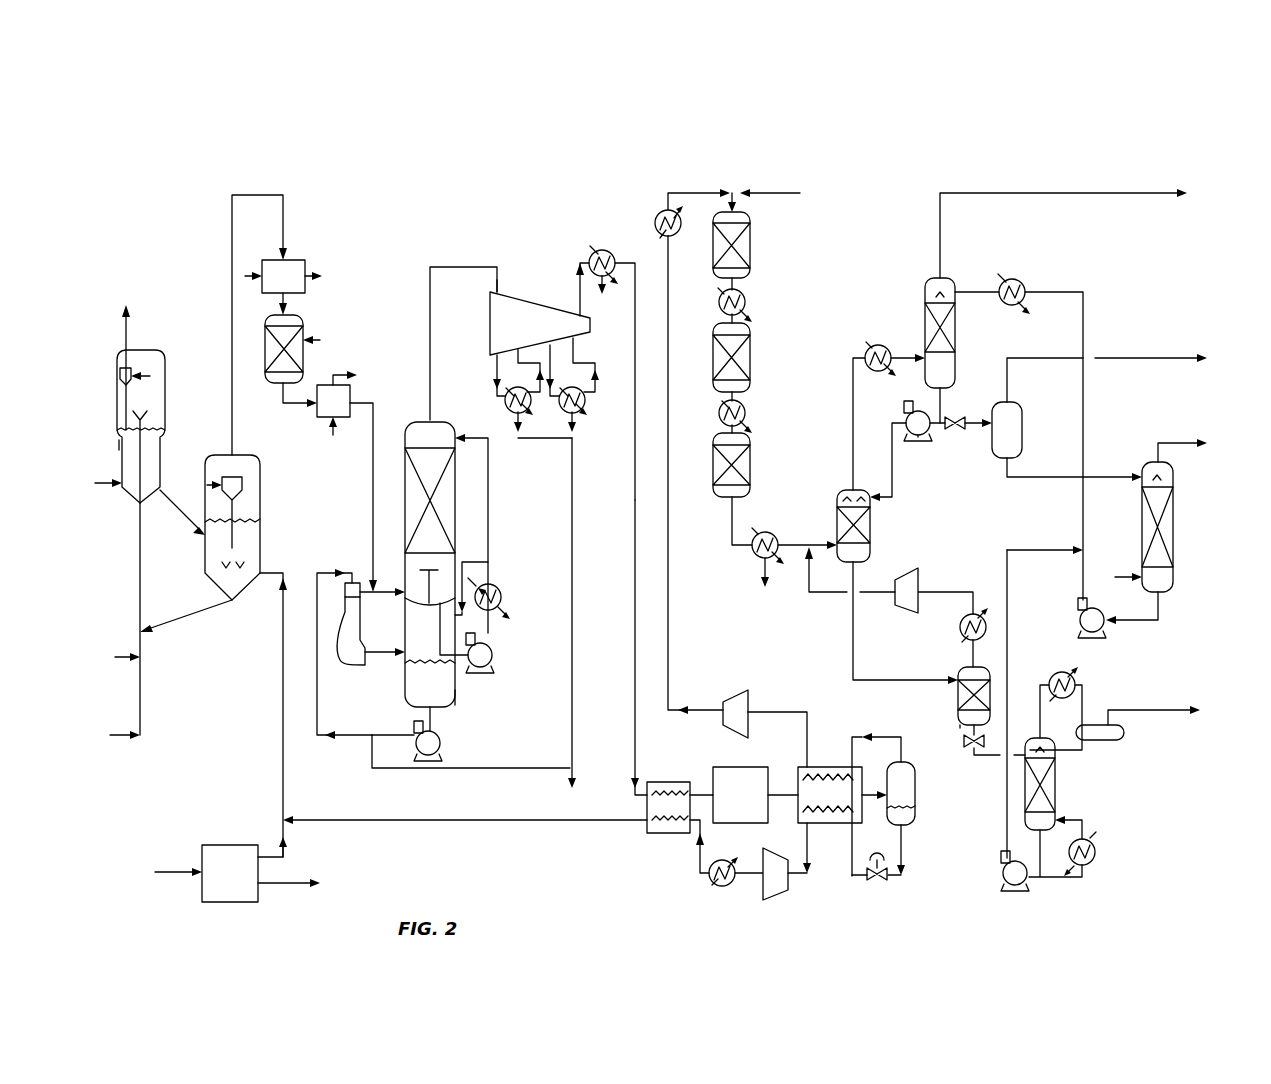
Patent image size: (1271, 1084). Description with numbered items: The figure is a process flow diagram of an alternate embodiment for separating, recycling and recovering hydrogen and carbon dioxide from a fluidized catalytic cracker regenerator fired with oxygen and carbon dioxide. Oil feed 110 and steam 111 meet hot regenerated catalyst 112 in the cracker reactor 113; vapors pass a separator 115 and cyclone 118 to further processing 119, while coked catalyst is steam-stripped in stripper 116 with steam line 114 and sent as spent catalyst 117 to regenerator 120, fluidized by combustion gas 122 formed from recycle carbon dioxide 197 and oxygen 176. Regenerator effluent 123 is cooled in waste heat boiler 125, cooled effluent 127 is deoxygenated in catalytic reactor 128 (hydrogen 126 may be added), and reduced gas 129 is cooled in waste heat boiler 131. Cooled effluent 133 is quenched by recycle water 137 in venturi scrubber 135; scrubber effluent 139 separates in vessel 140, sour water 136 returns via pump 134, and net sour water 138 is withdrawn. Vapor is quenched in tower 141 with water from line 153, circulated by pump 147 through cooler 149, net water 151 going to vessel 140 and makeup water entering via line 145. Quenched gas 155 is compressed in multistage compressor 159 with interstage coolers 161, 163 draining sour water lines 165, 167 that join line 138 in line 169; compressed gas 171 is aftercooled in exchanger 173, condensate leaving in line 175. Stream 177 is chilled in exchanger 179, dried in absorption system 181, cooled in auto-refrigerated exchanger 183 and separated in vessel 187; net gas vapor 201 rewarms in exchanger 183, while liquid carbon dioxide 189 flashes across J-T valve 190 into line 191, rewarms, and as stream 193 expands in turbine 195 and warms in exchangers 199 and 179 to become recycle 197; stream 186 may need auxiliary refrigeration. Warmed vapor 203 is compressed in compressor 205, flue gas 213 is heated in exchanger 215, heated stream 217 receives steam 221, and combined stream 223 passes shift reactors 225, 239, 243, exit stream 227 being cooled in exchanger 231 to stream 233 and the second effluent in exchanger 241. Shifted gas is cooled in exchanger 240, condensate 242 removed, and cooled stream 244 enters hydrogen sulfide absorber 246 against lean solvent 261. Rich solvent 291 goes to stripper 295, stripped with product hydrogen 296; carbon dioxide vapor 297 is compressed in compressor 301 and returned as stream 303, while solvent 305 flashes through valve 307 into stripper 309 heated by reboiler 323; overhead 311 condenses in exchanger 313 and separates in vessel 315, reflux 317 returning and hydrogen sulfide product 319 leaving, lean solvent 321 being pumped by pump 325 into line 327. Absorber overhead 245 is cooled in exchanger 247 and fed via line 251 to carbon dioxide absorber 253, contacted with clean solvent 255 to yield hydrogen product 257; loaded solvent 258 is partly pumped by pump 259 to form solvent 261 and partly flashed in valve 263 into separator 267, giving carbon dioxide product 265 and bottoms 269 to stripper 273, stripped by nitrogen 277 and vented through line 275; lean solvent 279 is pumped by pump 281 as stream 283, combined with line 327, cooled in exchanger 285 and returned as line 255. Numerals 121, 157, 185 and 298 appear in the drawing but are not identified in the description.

The oil feed 110 is at (110, 652).
The steam 111 is at (130, 735).
The regenerated catalyst line 112 is at (192, 612).
The fluidized catalytic cracker reactor 113 is at (138, 577).
The steam line 114 is at (98, 486).
The separator 115 is at (168, 400).
The reactor stripper 116 is at (117, 455).
The spent catalyst 117 is at (165, 510).
The cyclone 118 is at (132, 370).
The further processing 119 is at (136, 328).
The regenerator 120 is at (270, 522).
The inlet distributor 121 is at (244, 487).
The combustion gas 122 is at (275, 573).
The effluent stream line 123 is at (283, 220).
The waste heat boiler 125 is at (310, 276).
The hydrogen 126 is at (312, 340).
The cooled effluent 127 is at (280, 310).
The catalytic reactor 128 is at (268, 385).
The deoxygenated and reduced effluent gas 129 is at (284, 405).
The waste heat boiler 131 is at (364, 401).
The cooled effluent 133 is at (372, 452).
The pump 134 is at (442, 752).
The venturi scrubber 135 is at (352, 668).
The sour water 136 is at (432, 722).
The recycle water stream 137 is at (342, 728).
The net sour process water stream 138 is at (455, 770).
The venturi scrubber effluent 139 is at (380, 652).
The separator vessel 140 is at (448, 700).
The quench tower 141 is at (455, 503).
The makeup water line 145 is at (390, 600).
The pump 147 is at (494, 662).
The cooler 149 is at (500, 582).
The net process water line 151 is at (470, 558).
The quench water line 153 is at (492, 514).
The quenched effluent gas 155 is at (452, 267).
The expander inlet line 157 is at (497, 284).
The multistage compressor 159 is at (540, 323).
The interstage cooling exchanger 161 is at (504, 406).
The interstage cooling exchanger 163 is at (586, 408).
The sour water line 165 is at (530, 440).
The sour water line 167 is at (578, 480).
The combined sour water line 169 is at (612, 545).
The compressed gas 171 is at (578, 258).
The aftercooling heat exchanger 173 is at (614, 250).
The sour water knockout line 175 is at (603, 296).
The compressed effluent stream 177 is at (635, 268).
The oxygen stream 176 is at (286, 845).
The heat exchanger 179 is at (662, 784).
The absorption system 181 is at (740, 795).
The auto-refrigerated heat exchanger 183 is at (836, 824).
The gas line 185 is at (782, 790).
The stream 186 is at (874, 792).
The separator vessel 187 is at (915, 788).
The liquid recycle carbon dioxide 189 is at (903, 834).
The J-T valve 190 is at (882, 884).
The cold recycle carbon dioxide line 191 is at (860, 880).
The rewarmed recycle carbon dioxide 193 is at (806, 876).
The turbine 195 is at (760, 888).
The recycle carbon dioxide 197 is at (446, 818).
The exchanger 199 is at (710, 880).
The net combustion gas vapor 201 is at (890, 736).
The warmed vapor stream 203 is at (770, 712).
The compressor 205 is at (736, 692).
The net effluent flue gas stream 213 is at (668, 388).
The heat exchanger 215 is at (656, 226).
The heated stream 217 is at (706, 196).
The steam line 221 is at (794, 205).
The combined stream line 223 is at (738, 204).
The first shift reactor 225 is at (750, 255).
The exit stream 227 is at (744, 294).
The heat exchanger 231 is at (716, 288).
The cooled stream line 233 is at (720, 322).
The second shift reactor 239 is at (750, 362).
The heat exchanger 240 is at (760, 536).
The heat exchanger 241 is at (742, 410).
The condensate line 242 is at (762, 578).
The third shift reactor 243 is at (750, 470).
The cooled stream 244 is at (808, 545).
The overhead gas 245 is at (870, 404).
The hydrogen sulfide absorber tower 246 is at (870, 520).
The exchanger 247 is at (872, 346).
The line 251 is at (904, 358).
The carbon dioxide absorber 253 is at (955, 332).
The clean physical solvent line 255 is at (972, 294).
The hydrogen product line 257 is at (1090, 195).
The bottom stream 258 is at (920, 410).
The pump 259 is at (918, 440).
The hydrogen sulfide lean solvent 261 is at (892, 470).
The valve 263 is at (955, 416).
The carbon dioxide overhead line 265 is at (1112, 358).
The separator 267 is at (1024, 446).
The bottom stream 269 is at (1028, 477).
The carbon dioxide stripper column 273 is at (1176, 520).
The vent line 275 is at (1140, 446).
The nitrogen line 277 is at (1120, 574).
The lean solvent line 279 is at (1162, 608).
The pump 281 is at (1100, 636).
The lean solvent 283 is at (1075, 576).
The heat exchanger 285 is at (1014, 278).
The hydrogen sulfide rich solvent 291 is at (853, 570).
The carbon dioxide stripper 295 is at (958, 700).
The product hydrogen 296 is at (958, 721).
The carbon dioxide vapor 297 is at (968, 656).
The heater 298 is at (958, 630).
The compressor 301 is at (914, 580).
The high pressure carbon dioxide stream 303 is at (822, 592).
The hydrogen sulfide rich solvent 305 is at (960, 742).
The valve 307 is at (966, 748).
The hydrogen sulfide stripper 309 is at (1055, 792).
The stripper overhead 311 is at (1038, 696).
The exchanger 313 is at (1062, 672).
The separator vessel 315 is at (1104, 742).
The reflux liquid 317 is at (1070, 752).
The hydrogen sulfide product vapor 319 is at (1112, 710).
The lean solvent 321 is at (1069, 845).
The reboiler 323 is at (1094, 854).
The pump 325 is at (1000, 880).
The lean solvent line 327 is at (1005, 594).